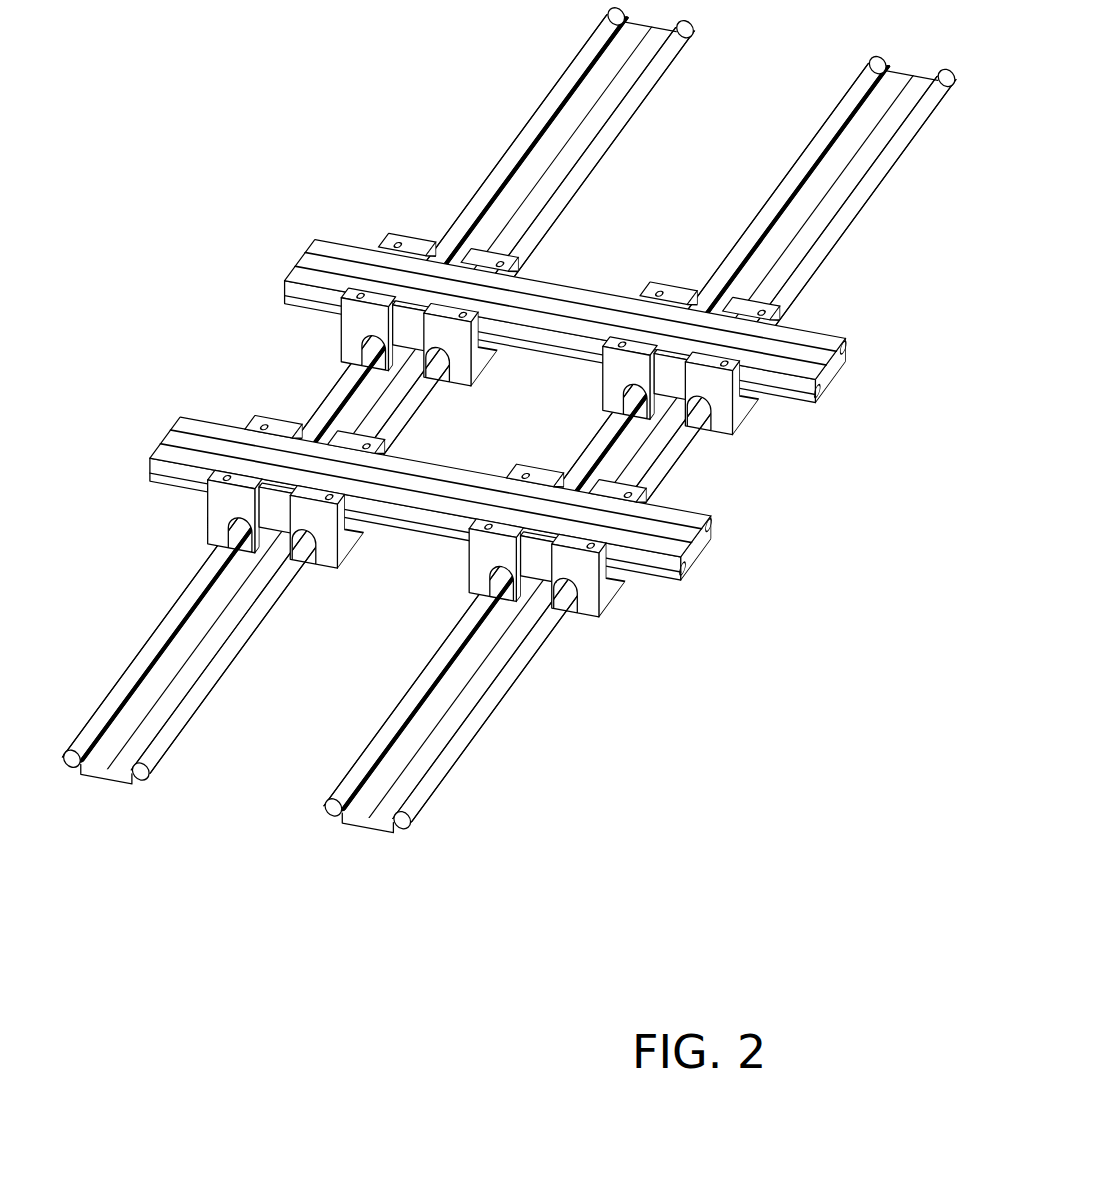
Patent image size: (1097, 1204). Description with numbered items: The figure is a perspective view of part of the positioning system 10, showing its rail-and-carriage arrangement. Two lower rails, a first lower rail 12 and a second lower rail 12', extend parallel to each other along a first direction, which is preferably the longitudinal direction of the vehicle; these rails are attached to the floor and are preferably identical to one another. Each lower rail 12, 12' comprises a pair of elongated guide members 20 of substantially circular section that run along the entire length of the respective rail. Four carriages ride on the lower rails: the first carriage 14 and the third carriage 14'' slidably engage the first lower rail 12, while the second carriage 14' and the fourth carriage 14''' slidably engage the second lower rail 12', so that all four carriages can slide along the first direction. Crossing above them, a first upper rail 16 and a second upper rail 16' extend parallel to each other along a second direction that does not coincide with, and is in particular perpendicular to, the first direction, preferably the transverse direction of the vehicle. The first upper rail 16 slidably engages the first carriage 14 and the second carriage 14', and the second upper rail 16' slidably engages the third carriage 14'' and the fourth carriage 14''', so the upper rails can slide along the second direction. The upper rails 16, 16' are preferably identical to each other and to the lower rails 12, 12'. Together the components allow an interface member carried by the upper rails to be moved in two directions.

The positioning system 10 is at (208, 296).
The first lower rail 12 is at (379, 448).
The second lower rail 12' is at (634, 492).
The first carriage 14 is at (229, 491).
The second carriage 14' is at (557, 606).
The third carriage 14'' is at (429, 229).
The fourth carriage 14''' is at (711, 397).
The first upper rail 16 is at (471, 524).
The second upper rail 16' is at (618, 326).
The elongated guide members 20 is at (828, 347).